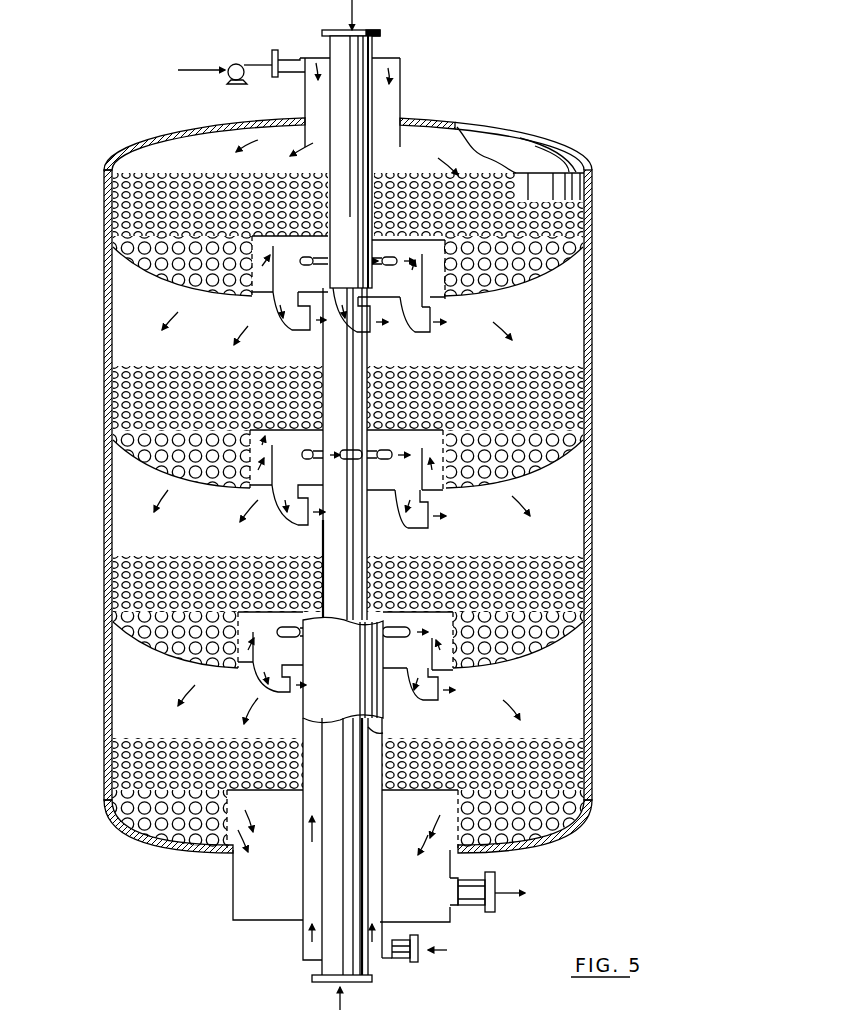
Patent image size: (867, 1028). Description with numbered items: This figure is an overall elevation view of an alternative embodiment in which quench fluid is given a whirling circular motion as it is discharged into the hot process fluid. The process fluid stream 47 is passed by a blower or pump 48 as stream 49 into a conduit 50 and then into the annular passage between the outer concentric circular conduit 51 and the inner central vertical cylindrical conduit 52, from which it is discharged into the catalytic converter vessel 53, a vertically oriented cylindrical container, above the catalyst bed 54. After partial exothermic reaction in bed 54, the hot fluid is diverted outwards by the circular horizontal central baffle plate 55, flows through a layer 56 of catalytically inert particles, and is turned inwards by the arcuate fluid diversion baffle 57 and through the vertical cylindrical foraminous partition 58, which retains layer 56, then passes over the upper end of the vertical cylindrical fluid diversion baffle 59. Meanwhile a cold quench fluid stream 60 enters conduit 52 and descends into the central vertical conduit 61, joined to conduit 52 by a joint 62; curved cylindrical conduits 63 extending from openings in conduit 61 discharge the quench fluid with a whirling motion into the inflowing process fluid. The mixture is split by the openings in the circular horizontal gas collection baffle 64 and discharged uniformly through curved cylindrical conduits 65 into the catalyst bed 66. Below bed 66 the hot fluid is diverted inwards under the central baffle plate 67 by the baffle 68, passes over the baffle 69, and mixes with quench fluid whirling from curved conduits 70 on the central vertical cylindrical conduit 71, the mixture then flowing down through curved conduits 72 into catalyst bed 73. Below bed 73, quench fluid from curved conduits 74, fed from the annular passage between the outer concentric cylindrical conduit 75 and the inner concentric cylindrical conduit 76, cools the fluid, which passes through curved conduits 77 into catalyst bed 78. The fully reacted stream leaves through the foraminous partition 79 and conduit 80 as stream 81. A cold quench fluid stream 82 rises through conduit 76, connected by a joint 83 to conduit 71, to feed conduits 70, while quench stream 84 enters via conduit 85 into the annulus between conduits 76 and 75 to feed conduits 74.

The process fluid stream 47 is at (180, 72).
The blower or pump 48 is at (233, 84).
The stream 49 is at (237, 64).
The conduit 50 is at (290, 77).
The outer concentric circular conduit 51 is at (400, 96).
The inner central vertical cylindrical conduit 52 is at (380, 36).
The catalytic converter vessel 53 is at (104, 182).
The catalyst bed 54 is at (112, 218).
The circular horizontal central baffle plate 55 is at (272, 234).
The layer of catalytically inert particles 56 is at (113, 247).
The fluid diversion baffle 57 is at (146, 273).
The vertical cylindrical foraminous partition 58 is at (250, 296).
The vertical cylindrical fluid diversion baffle 59 is at (252, 252).
The cold quench fluid stream 60 is at (356, 20).
The central vertical conduit 61 is at (328, 166).
The joint 62 is at (372, 156).
The curved cylindrical conduits 63 is at (320, 257).
The circular horizontal gas collection baffle 64 is at (273, 298).
The curved cylindrical conduits 65 is at (300, 332).
The catalyst bed 66 is at (112, 380).
The central baffle plate 67 is at (276, 430).
The baffle 68 is at (143, 466).
The baffle 69 is at (250, 450).
The curved conduits 70 is at (320, 440).
The central vertical cylindrical conduit 71 is at (372, 460).
The curved conduits 72 is at (283, 513).
The catalyst bed 73 is at (112, 576).
The curved conduits 74 is at (290, 622).
The outer concentric cylindrical conduit 75 is at (383, 700).
The inner concentric cylindrical conduit 76 is at (382, 756).
The curved conduits 77 is at (280, 700).
The catalyst bed 78 is at (112, 754).
The foraminous partition 79 is at (233, 792).
The conduit 80 is at (470, 910).
The stream 81 is at (505, 895).
The cold quench fluid stream 82 is at (344, 1000).
The joint 83 is at (322, 538).
The quench stream 84 is at (447, 950).
The conduit 85 is at (390, 960).